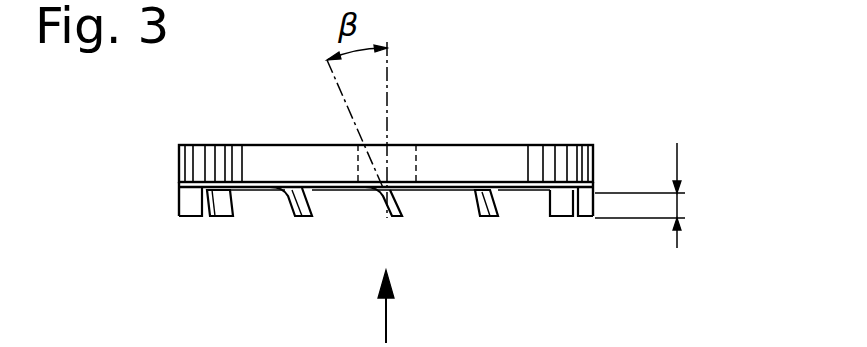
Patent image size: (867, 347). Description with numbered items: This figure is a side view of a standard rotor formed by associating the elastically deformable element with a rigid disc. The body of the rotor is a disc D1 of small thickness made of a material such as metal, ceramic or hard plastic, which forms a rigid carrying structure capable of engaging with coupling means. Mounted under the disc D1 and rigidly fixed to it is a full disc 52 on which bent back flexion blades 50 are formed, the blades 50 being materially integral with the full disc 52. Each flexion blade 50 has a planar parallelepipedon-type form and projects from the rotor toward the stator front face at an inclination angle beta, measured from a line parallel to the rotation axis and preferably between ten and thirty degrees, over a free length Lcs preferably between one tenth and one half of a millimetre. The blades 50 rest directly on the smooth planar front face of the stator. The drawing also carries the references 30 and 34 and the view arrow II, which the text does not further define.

The ring support 30 is at (466, 102).
The peripheral surface of ring 34 is at (498, 158).
The flexion blade 50 is at (305, 218).
The full disc 52 is at (447, 192).
The disc D1 is at (268, 163).
The free length Lcs is at (757, 226).
The view direction arrow II is at (400, 306).